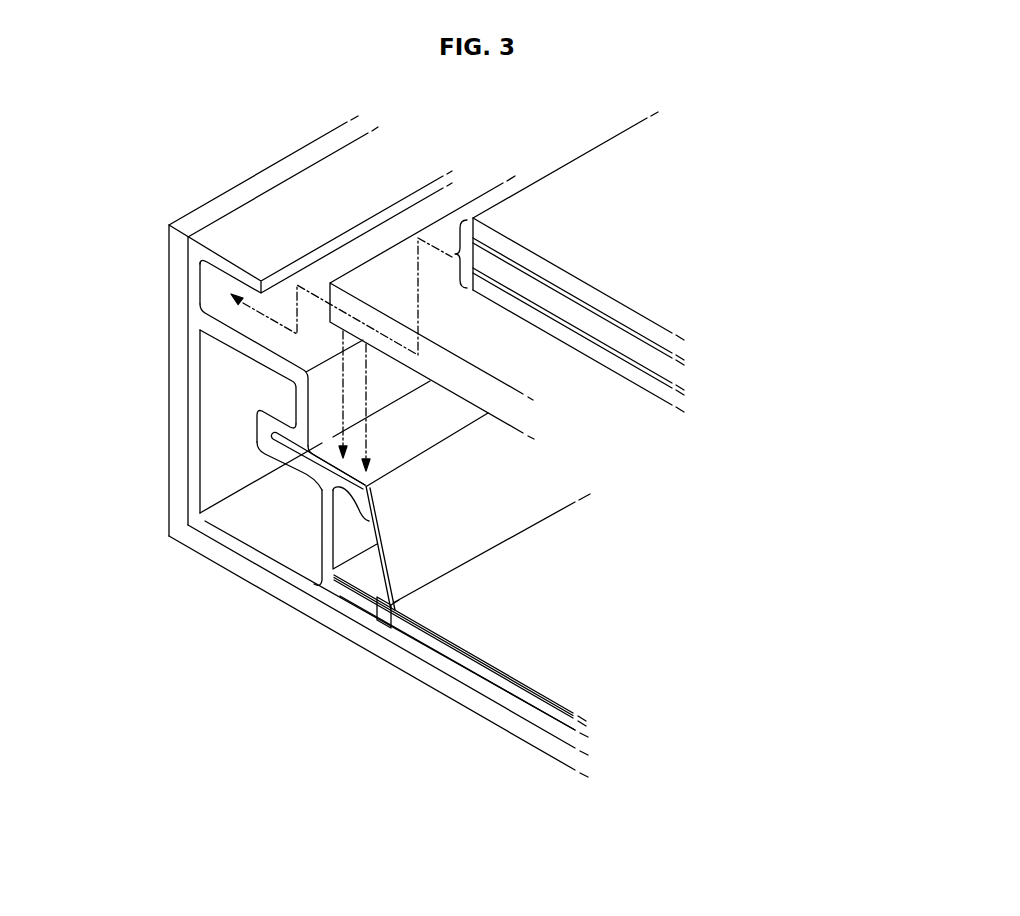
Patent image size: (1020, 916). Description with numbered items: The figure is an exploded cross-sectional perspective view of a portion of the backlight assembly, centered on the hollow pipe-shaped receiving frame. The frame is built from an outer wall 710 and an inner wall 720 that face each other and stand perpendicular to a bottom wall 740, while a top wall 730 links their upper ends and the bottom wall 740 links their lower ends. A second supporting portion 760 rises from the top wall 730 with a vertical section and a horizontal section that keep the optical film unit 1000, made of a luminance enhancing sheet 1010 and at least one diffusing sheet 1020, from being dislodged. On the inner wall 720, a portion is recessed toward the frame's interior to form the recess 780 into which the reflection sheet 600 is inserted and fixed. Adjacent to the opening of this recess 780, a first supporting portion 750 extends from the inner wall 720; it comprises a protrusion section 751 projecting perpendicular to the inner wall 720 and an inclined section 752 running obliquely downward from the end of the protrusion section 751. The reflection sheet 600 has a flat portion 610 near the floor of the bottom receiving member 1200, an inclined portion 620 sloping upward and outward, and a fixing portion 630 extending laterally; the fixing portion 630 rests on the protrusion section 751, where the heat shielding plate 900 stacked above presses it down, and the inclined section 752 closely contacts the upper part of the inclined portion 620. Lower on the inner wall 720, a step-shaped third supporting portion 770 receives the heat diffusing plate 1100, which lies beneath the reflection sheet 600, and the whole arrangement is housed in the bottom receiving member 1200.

The outer wall 710 is at (190, 478).
The inner wall 720 is at (270, 580).
The top wall 730 is at (238, 339).
The bottom wall 740 is at (243, 548).
The first supporting portion 750 is at (291, 574).
The protrusion section 751 is at (320, 604).
The inclined section 752 is at (360, 516).
The second supporting portion 760 is at (189, 282).
The third supporting portion 770 is at (382, 640).
The recess 780 is at (238, 419).
The reflection sheet 600 is at (493, 594).
The flat portion 610 is at (458, 640).
The inclined portion 620 is at (407, 567).
The fixing portion 630 is at (407, 463).
The heat shielding plate 900 is at (538, 422).
The optical film unit 1000 is at (655, 262).
The luminance enhancing sheet 1010 is at (675, 351).
The diffusing sheet 1020 is at (677, 378).
The heat diffusing plate 1100 is at (550, 707).
The bottom receiving member 1200 is at (447, 687).